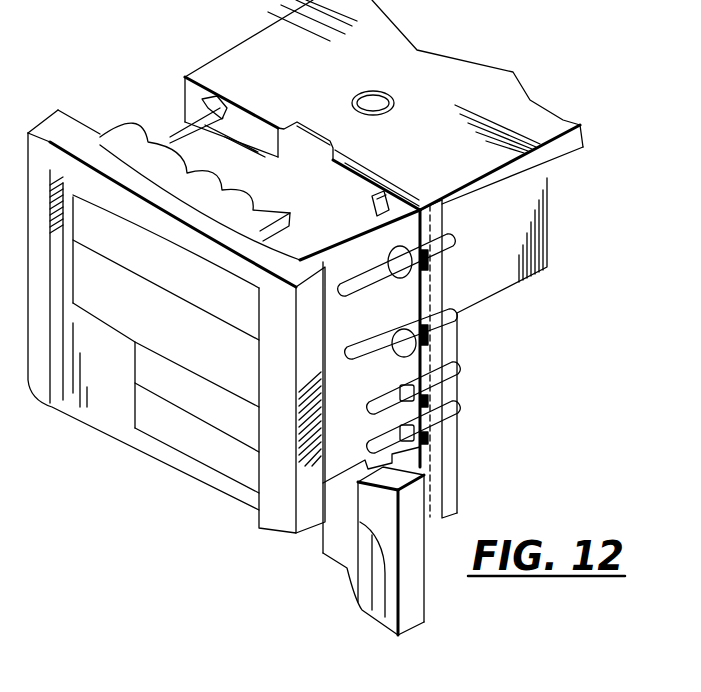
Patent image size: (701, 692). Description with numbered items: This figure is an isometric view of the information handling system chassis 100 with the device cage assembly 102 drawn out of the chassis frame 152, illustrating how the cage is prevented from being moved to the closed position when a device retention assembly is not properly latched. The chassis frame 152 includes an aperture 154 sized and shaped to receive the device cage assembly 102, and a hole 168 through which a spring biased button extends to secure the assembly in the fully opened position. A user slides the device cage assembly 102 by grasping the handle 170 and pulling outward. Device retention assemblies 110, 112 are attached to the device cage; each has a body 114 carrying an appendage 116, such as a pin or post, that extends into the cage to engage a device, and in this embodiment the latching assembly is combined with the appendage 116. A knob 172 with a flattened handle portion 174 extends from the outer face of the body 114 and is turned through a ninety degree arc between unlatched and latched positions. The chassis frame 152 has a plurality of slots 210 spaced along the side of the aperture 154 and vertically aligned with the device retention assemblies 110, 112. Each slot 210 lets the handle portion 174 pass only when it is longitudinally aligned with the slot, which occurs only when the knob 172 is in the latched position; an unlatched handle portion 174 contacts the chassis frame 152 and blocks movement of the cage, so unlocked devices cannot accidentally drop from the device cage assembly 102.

The information handling system chassis 100 is at (247, 50).
The device cage assembly 102 is at (262, 521).
The device retention assembly 110 is at (382, 276).
The device retention assembly 112 is at (368, 397).
The body 114 is at (347, 272).
The appendage 116 is at (400, 452).
The chassis frame 152 is at (563, 150).
The aperture 154 is at (318, 147).
The hole 168 is at (373, 107).
The handle 170 is at (121, 138).
The knob 172 is at (430, 232).
The handle portion 174 is at (432, 276).
The slot 210 is at (442, 350).